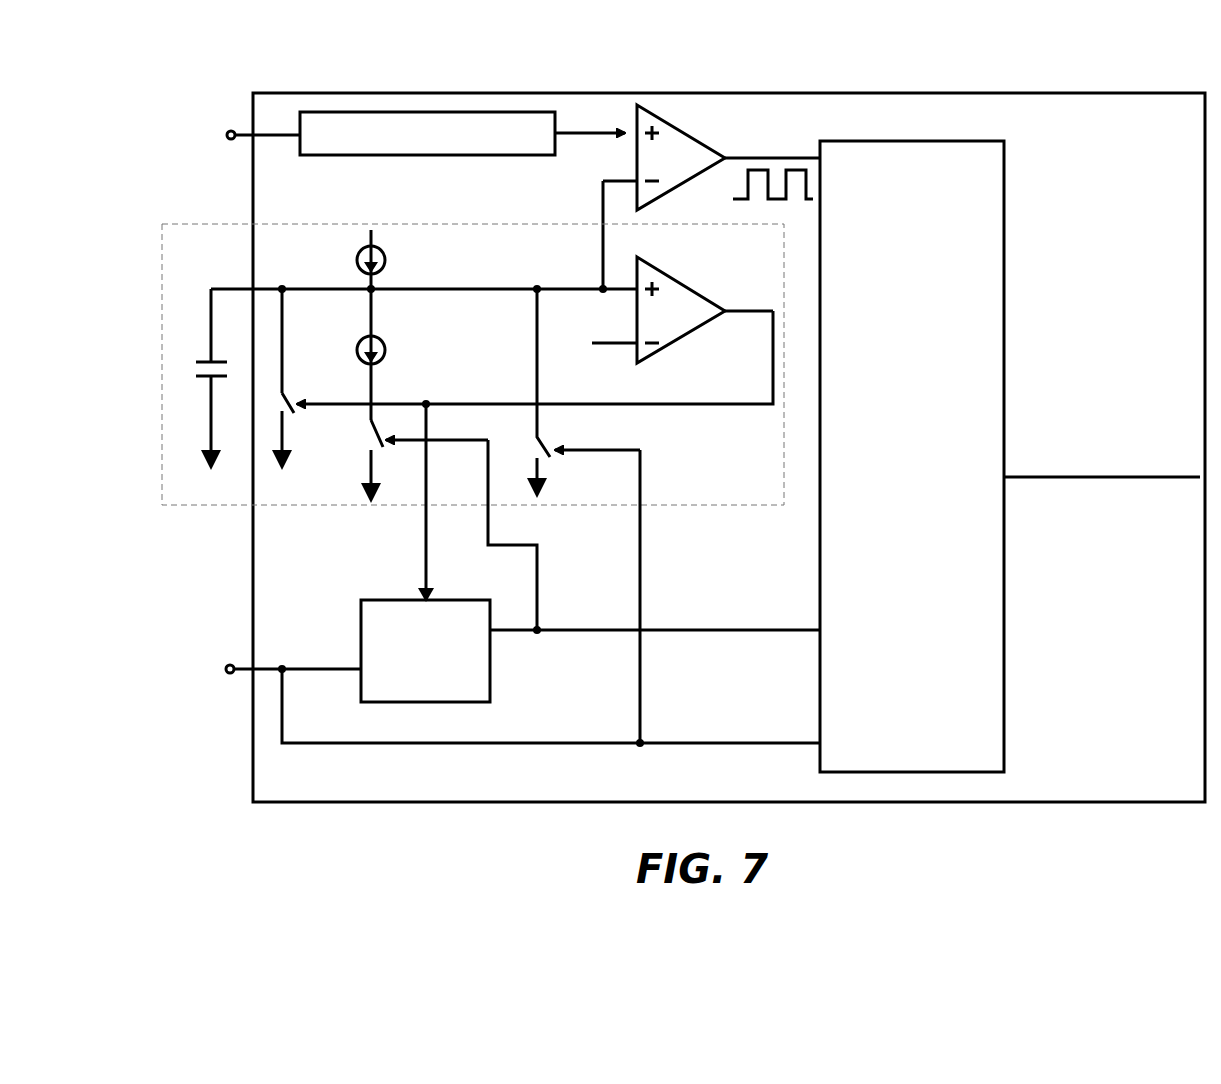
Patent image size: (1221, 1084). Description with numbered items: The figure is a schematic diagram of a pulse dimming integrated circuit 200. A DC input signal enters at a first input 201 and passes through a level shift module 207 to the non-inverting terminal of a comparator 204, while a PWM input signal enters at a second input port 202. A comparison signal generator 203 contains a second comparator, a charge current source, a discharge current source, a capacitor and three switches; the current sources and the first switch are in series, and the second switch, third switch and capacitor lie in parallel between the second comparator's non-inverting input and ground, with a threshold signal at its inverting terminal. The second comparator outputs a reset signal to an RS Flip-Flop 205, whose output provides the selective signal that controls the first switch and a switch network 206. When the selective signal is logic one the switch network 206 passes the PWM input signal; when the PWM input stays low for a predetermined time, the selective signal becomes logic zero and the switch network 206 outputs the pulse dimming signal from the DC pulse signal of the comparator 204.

The pulse dimming integrated circuit 200 is at (218, 54).
The DC input terminal 201 is at (233, 143).
The second input port 202 is at (220, 667).
The comparison signal generator 203 is at (330, 508).
The comparator 204 is at (710, 140).
The RS Flip-Flop 205 is at (494, 683).
The switch network 206 is at (1005, 210).
The level shift module 207 is at (515, 158).